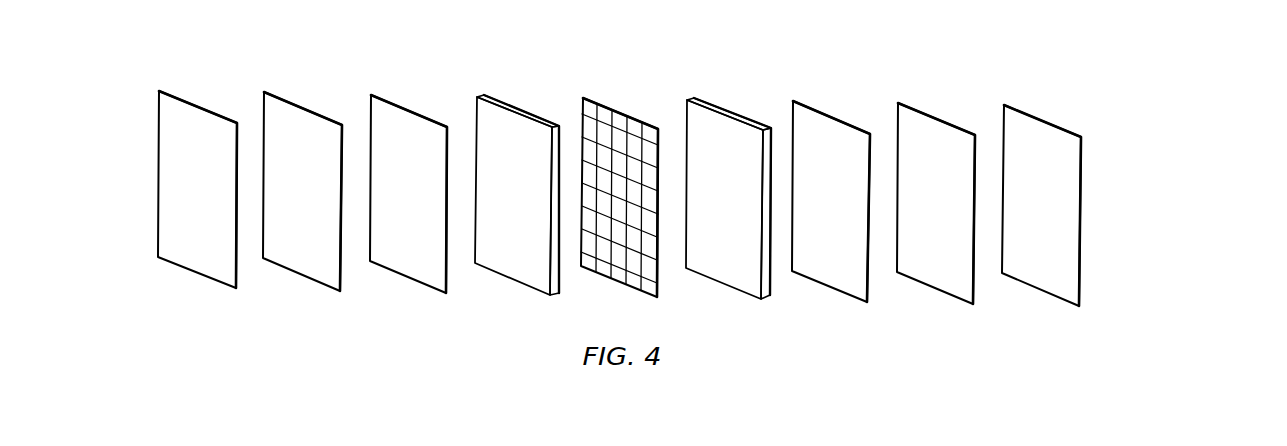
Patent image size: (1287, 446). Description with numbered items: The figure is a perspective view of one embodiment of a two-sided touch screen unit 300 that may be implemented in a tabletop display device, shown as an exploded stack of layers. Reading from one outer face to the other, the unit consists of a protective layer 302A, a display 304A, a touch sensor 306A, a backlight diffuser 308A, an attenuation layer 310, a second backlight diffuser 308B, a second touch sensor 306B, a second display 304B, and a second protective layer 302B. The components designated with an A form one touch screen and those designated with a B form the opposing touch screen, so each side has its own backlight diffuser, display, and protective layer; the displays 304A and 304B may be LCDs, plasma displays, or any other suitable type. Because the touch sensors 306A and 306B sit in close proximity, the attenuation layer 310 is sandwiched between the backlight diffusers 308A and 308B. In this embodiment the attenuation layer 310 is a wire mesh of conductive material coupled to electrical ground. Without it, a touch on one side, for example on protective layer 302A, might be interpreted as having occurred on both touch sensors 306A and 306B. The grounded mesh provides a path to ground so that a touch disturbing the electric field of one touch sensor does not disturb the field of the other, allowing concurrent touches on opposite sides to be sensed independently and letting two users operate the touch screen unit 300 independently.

The touch screen unit 300 is at (1154, 176).
The protective layer 302A is at (192, 270).
The display 304A is at (296, 271).
The touch sensor 306A is at (403, 274).
The backlight diffuser 308A is at (508, 276).
The attenuation layer 310 is at (611, 279).
The backlight diffuser 308B is at (719, 281).
The touch sensor 306B is at (824, 284).
The display 304B is at (929, 285).
The protective layer 302B is at (1034, 287).